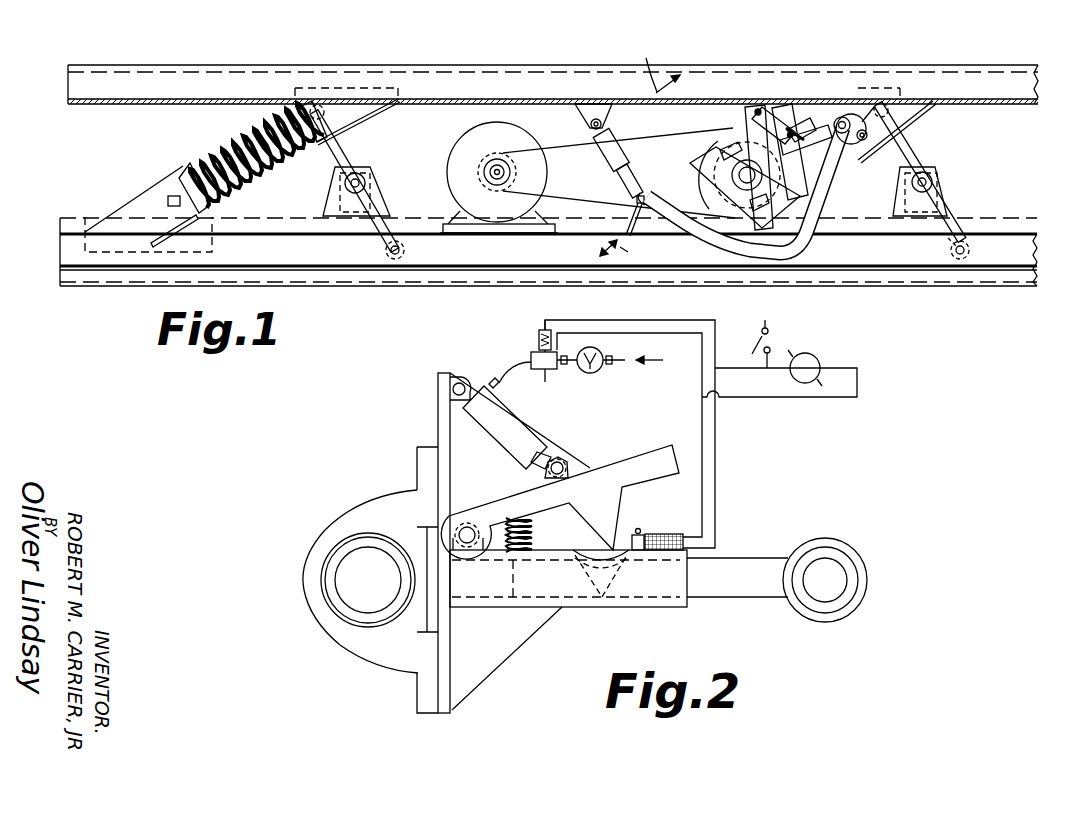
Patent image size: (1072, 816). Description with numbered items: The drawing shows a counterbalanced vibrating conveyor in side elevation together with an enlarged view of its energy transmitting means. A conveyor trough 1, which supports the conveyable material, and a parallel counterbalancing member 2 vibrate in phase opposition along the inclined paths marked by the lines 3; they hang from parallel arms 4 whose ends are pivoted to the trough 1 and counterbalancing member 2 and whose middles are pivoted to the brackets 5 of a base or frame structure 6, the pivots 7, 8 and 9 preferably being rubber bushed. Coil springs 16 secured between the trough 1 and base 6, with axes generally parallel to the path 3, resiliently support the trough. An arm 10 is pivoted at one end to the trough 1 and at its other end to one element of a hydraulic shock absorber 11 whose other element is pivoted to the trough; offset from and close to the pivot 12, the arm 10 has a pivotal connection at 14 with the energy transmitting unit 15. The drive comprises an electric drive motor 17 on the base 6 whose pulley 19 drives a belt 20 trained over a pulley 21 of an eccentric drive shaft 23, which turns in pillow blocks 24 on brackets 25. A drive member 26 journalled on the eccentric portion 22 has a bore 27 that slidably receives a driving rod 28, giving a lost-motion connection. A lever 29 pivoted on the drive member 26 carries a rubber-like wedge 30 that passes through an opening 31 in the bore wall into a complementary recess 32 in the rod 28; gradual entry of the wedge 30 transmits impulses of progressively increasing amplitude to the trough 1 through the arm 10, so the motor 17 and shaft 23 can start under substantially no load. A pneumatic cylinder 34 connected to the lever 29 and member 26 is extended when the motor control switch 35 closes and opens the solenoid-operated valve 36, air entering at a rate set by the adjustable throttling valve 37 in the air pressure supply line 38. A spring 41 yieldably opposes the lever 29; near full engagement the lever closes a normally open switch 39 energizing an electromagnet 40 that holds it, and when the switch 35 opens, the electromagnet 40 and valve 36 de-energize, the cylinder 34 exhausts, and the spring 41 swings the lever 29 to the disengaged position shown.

In FIG. 1, the conveyor trough 1 is at (864, 80).
In FIG. 1, the counterbalancing member 2 is at (914, 250).
In FIG. 1, the inclined paths (lines) 3 is at (640, 152).
In FIG. 1, the parallel arms 4 is at (350, 150).
In FIG. 1, the brackets 5 is at (378, 190).
In FIG. 1, the base or frame structure 6 is at (985, 222).
In FIG. 1, the pivot 7 is at (404, 251).
In FIG. 1, the pivot 8 is at (362, 181).
In FIG. 1, the pivot 9 is at (322, 97).
In FIG. 1, the arm 10 is at (832, 176).
In FIG. 1, the hydraulic shock absorber 11 is at (602, 157).
In FIG. 1, the pivot 12 is at (872, 150).
In FIG. 1, the pivotal connection 14 is at (841, 117).
In FIG. 1, the energy transmitting unit 15 is at (797, 130).
In FIG. 2, the energy transmitting unit 15 is at (728, 600).
In FIG. 1, the coil springs 16 is at (222, 143).
In FIG. 1, the electric drive motor 17 is at (465, 140).
In FIG. 2, the electric drive motor 17 is at (803, 353).
In FIG. 1, the pulley 19 is at (486, 172).
In FIG. 1, the belt 20 is at (560, 143).
In FIG. 1, the pulley 21 is at (727, 146).
In FIG. 2, the eccentric portion 22 is at (343, 614).
In FIG. 1, the eccentric drive shaft 23 is at (739, 176).
In FIG. 2, the eccentric drive shaft 23 is at (369, 565).
In FIG. 1, the pillow blocks 24 is at (785, 232).
In FIG. 1, the brackets 25 is at (690, 204).
In FIG. 1, the drive member 26 is at (746, 108).
In FIG. 2, the drive member 26 is at (396, 656).
In FIG. 2, the bore 27 is at (479, 607).
In FIG. 1, the driving rod 28 is at (820, 132).
In FIG. 2, the driving rod 28 is at (752, 568).
In FIG. 1, the lever 29 is at (801, 130).
In FIG. 2, the lever 29 is at (622, 466).
In FIG. 2, the wedge 30 is at (622, 522).
In FIG. 2, the opening 31 is at (578, 556).
In FIG. 2, the recess 32 is at (625, 574).
In FIG. 1, the pneumatic cylinder 34 is at (760, 106).
In FIG. 2, the pneumatic cylinder 34 is at (520, 438).
In FIG. 2, the motor control switch 35 is at (757, 344).
In FIG. 2, the solenoid-operated valve 36 is at (529, 353).
In FIG. 2, the adjustable throttling valve 37 is at (591, 373).
In FIG. 2, the air pressure supply line 38 is at (622, 366).
In FIG. 2, the normally open switch 39 is at (641, 539).
In FIG. 2, the electromagnet 40 is at (683, 532).
In FIG. 2, the spring 41 is at (503, 523).